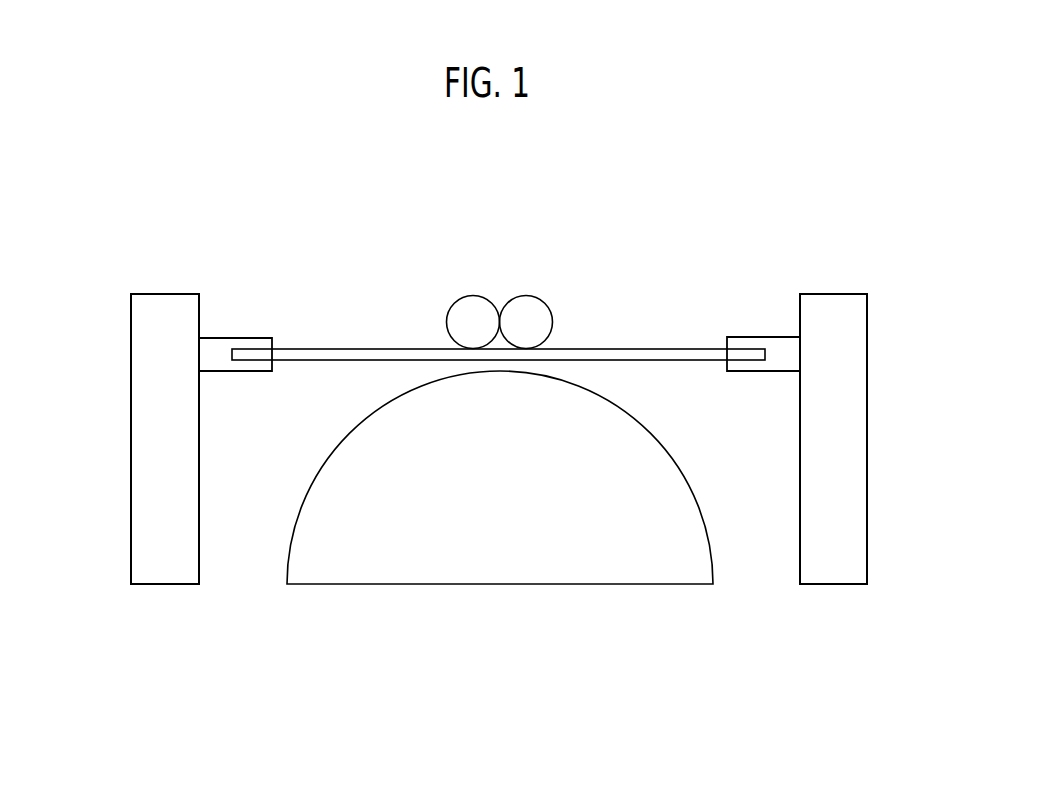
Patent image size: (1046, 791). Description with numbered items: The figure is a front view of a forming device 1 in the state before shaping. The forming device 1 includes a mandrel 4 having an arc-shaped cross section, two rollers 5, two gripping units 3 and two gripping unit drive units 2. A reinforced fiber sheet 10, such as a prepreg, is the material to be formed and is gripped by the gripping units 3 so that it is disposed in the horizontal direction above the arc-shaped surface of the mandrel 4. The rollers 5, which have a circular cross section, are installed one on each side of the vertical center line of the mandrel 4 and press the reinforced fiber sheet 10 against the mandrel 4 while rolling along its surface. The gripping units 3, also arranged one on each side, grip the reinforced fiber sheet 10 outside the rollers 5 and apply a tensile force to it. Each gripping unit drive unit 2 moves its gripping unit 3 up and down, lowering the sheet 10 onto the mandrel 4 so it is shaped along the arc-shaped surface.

The forming device 1 is at (830, 236).
The gripping unit drive unit 2 is at (131, 348).
The gripping unit 3 is at (236, 338).
The mandrel 4 is at (672, 452).
The roller 5 is at (473, 296).
The reinforced fiber sheet 10 is at (647, 348).